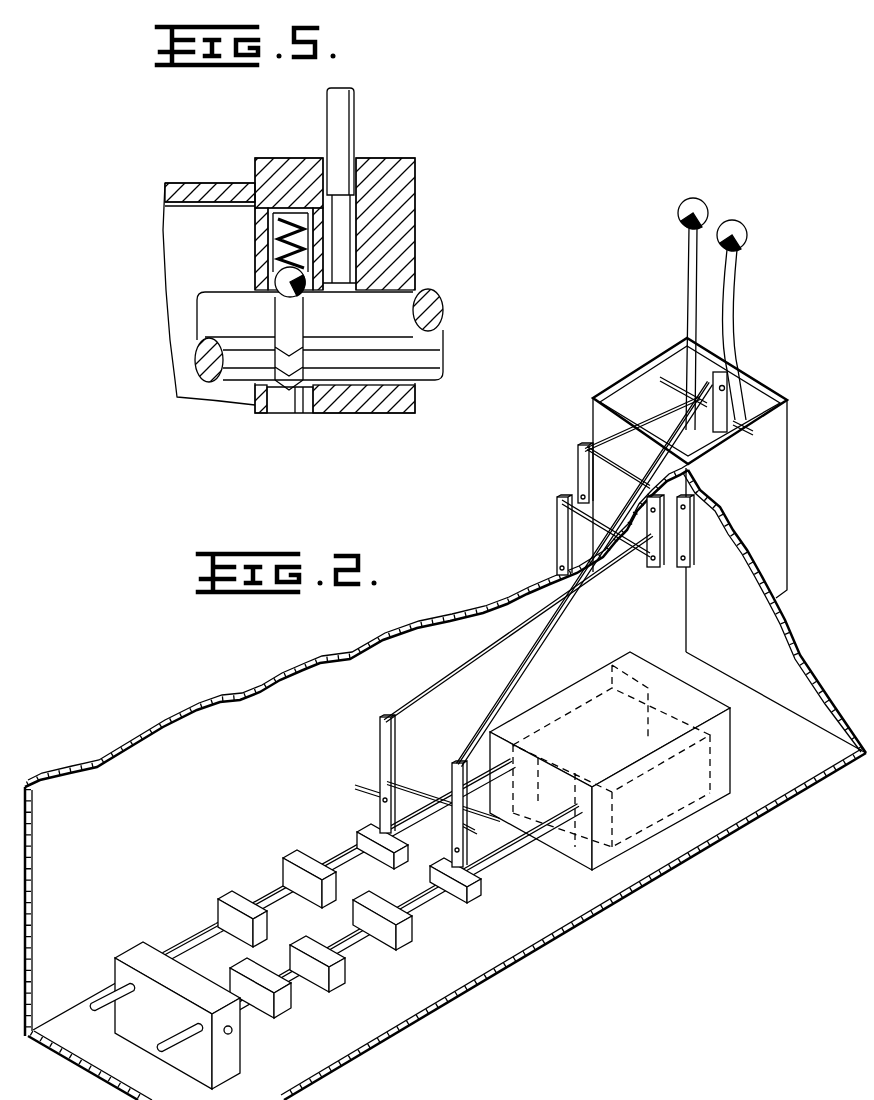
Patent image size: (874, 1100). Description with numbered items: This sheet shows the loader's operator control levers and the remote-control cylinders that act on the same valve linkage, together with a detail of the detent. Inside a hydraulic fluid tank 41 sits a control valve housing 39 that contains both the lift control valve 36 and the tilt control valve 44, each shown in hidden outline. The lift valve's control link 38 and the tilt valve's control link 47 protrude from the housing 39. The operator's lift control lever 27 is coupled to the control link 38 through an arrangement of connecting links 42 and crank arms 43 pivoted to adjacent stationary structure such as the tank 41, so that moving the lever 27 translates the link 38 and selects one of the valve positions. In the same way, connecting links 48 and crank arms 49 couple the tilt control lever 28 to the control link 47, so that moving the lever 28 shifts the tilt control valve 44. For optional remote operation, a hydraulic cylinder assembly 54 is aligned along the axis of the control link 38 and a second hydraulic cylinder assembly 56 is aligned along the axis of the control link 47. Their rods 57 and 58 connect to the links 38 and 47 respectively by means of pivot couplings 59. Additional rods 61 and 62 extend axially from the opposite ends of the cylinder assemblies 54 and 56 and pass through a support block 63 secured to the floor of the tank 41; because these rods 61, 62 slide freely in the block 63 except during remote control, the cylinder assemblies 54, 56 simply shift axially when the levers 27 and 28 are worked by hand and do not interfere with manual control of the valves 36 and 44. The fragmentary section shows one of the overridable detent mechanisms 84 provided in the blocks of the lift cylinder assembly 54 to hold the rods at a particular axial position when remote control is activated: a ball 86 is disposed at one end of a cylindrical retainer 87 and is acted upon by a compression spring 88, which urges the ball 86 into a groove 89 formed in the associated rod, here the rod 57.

In FIG. 2, the lift control lever 27 is at (730, 283).
In FIG. 2, the tilt control lever 28 is at (692, 243).
In FIG. 2, the lift control valve 36 is at (708, 773).
In FIG. 2, the control link 38 is at (505, 856).
In FIG. 2, the control valve housing 39 is at (658, 836).
In FIG. 2, the hydraulic fluid tank 41 is at (257, 747).
In FIG. 2, the connecting links 42 is at (700, 460).
In FIG. 2, the crank arms 43 is at (452, 776).
In FIG. 2, the tilt control valve 44 is at (612, 666).
In FIG. 2, the control link 47 is at (448, 824).
In FIG. 2, the connecting links 48 is at (468, 672).
In FIG. 2, the crank arms 49 is at (380, 738).
In FIG. 2, the hydraulic cylinder assembly 54 is at (343, 984).
In FIG. 2, the hydraulic cylinder assembly 56 is at (245, 872).
In FIG. 5, the rod 57 is at (432, 355).
In FIG. 2, the rod 57 is at (419, 908).
In FIG. 2, the rod 58 is at (350, 855).
In FIG. 2, the pivot couplings 59 is at (372, 828).
In FIG. 2, the rod 61 is at (158, 1048).
In FIG. 2, the rod 62 is at (198, 945).
In FIG. 2, the support block 63 is at (118, 972).
In FIG. 5, the detent mechanism 84 is at (272, 199).
In FIG. 5, the ball 86 is at (283, 296).
In FIG. 5, the cylindrical retainer 87 is at (268, 224).
In FIG. 5, the compression spring 88 is at (273, 249).
In FIG. 5, the groove 89 is at (293, 328).